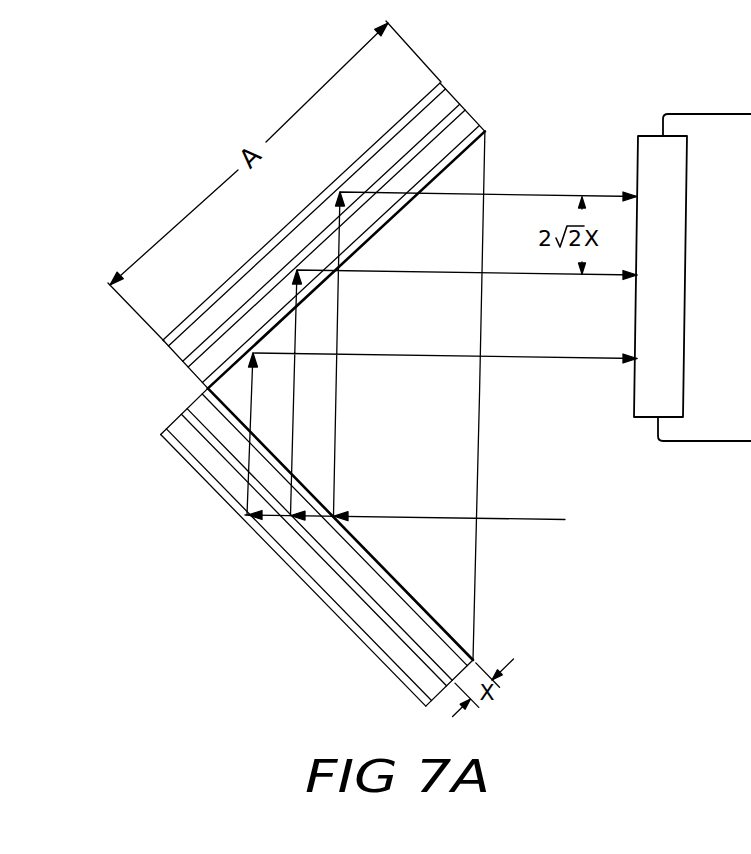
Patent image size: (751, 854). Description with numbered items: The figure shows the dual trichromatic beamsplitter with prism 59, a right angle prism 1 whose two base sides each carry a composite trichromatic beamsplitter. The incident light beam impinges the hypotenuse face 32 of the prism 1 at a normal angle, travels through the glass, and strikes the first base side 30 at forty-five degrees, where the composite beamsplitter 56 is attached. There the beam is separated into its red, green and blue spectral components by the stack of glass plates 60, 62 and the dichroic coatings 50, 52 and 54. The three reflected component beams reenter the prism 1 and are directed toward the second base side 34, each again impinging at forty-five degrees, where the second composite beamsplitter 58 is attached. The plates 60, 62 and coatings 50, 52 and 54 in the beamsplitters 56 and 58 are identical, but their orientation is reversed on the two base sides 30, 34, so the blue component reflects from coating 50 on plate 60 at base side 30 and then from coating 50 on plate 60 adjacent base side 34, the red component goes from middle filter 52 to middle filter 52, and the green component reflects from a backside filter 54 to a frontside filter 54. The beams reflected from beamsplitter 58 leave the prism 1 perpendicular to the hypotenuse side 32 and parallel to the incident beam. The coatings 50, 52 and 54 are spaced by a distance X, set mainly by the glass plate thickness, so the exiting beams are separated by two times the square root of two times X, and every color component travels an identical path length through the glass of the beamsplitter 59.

The right angle prism 1 is at (482, 462).
The first base side 30 is at (445, 622).
The hypotenuse face 32 is at (481, 578).
The second base side 34 is at (458, 156).
The dichroic coating 50 is at (446, 89).
The middle filter 52 is at (462, 106).
The backside filter 54 is at (488, 129).
The composite beamsplitter 56 is at (282, 577).
The second composite beamsplitter 58 is at (288, 216).
The dual trichromatic beamsplitter with prism 59 is at (158, 480).
The plate 60 is at (183, 357).
The plate 62 is at (203, 376).